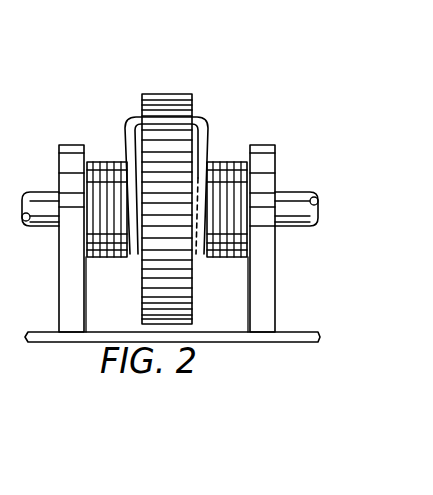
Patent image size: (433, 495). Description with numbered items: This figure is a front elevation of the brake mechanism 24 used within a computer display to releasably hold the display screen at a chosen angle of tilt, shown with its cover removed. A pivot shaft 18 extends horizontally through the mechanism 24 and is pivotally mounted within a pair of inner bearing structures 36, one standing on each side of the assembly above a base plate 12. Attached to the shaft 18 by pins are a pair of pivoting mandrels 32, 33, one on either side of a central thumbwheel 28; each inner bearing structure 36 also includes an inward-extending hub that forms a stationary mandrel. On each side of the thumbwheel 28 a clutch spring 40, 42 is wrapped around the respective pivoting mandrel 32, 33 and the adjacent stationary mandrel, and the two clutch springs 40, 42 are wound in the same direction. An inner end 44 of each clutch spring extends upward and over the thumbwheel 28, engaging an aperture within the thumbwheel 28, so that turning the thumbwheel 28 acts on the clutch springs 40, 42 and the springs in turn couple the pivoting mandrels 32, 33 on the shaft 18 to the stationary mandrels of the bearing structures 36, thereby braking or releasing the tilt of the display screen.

The base plate 12 is at (295, 332).
The pivot shaft 18 is at (290, 192).
The brake mechanism 24 is at (270, 98).
The thumbwheel 28 is at (160, 93).
The pivoting mandrel 32 is at (135, 258).
The pivoting mandrel 33 is at (196, 258).
The inner bearing structure 36 is at (274, 258).
The clutch spring 40 is at (97, 160).
The clutch spring 42 is at (237, 160).
The inner end 44 is at (133, 119).